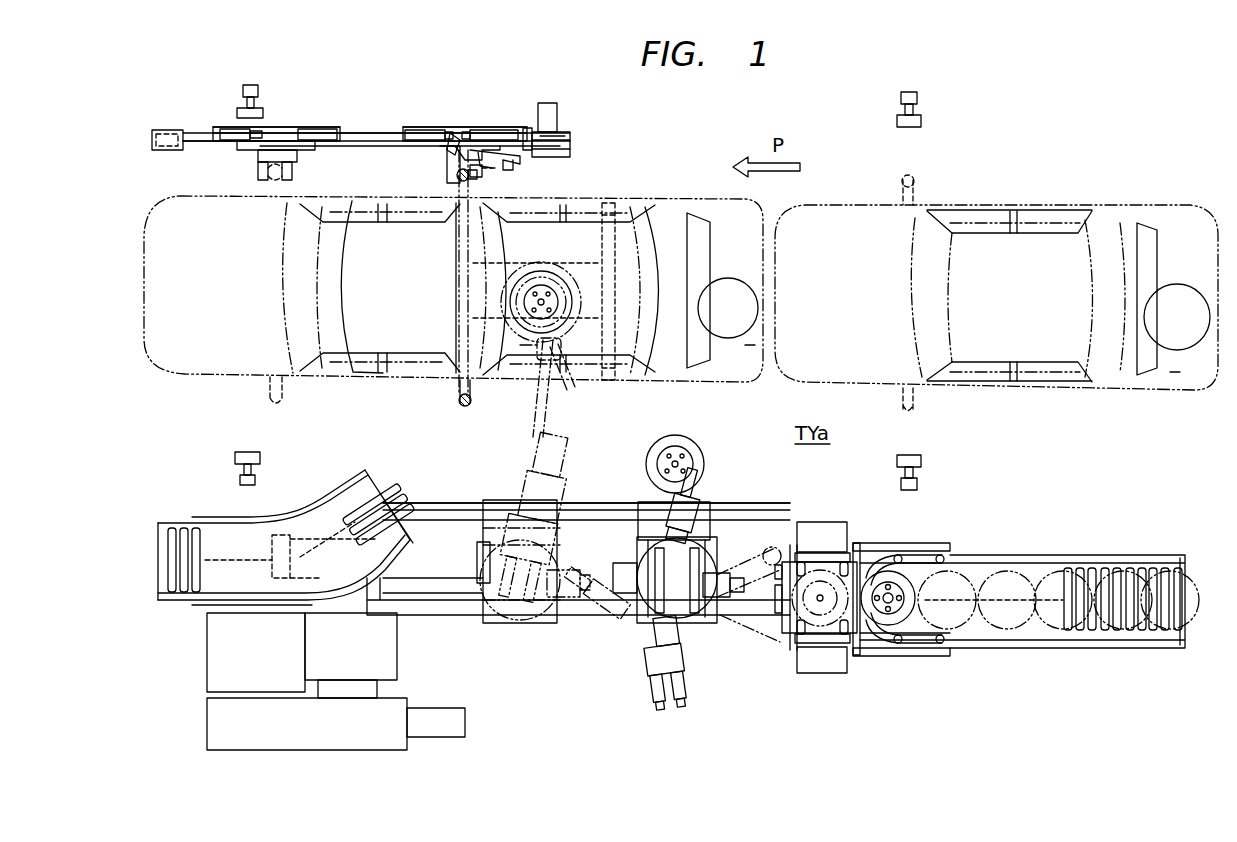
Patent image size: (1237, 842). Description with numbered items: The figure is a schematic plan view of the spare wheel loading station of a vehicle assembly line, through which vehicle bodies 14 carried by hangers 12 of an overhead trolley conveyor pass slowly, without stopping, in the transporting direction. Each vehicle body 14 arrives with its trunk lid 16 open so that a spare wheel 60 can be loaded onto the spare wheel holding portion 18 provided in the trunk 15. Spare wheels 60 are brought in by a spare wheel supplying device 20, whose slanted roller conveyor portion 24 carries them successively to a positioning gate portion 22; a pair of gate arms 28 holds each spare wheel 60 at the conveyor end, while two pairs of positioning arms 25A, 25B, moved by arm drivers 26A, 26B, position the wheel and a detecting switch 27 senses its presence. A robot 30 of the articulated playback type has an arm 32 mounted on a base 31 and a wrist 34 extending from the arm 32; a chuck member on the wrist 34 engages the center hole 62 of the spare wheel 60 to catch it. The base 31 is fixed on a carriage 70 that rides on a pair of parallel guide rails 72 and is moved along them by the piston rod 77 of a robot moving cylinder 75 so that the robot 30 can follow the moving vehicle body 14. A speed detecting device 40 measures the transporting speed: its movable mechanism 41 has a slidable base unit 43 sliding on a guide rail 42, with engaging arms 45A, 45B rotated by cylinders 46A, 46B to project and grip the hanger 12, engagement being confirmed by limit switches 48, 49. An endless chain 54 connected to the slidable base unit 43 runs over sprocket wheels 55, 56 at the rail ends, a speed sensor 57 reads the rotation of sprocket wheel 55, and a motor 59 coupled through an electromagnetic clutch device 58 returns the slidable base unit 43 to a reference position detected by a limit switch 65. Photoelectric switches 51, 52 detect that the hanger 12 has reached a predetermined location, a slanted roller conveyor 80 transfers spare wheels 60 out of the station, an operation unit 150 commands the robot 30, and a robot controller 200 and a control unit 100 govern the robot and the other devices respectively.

The hanger 12 is at (262, 196).
The vehicle body 14 is at (353, 378).
The trunk 15 is at (527, 348).
The trunk lid 16 is at (700, 250).
The spare wheel holding portion 18 is at (588, 268).
The spare wheel supplying device 20 is at (893, 662).
The positioning gate portion 22 is at (758, 601).
The roller conveyor portion 24 is at (968, 555).
The positioning arms 25A is at (755, 530).
The positioning arms 25B is at (793, 640).
The arm driver 26A is at (823, 522).
The arm driver 26B is at (822, 673).
The detecting switch 27 is at (778, 640).
The gate arms 28 is at (917, 543).
The robot 30 is at (643, 628).
The base 31 is at (630, 557).
The arm 32 is at (553, 397).
The wrist 34 is at (700, 497).
The speed detecting device 40 is at (388, 122).
The movable mechanism 41 is at (283, 128).
The guide rail 42 is at (370, 128).
The slidable base unit 43 is at (466, 130).
The engaging arm 45A is at (265, 170).
The engaging arm 45B is at (296, 170).
The cylinder 46A is at (414, 133).
The cylinder 46B is at (493, 130).
The limit switch 48 is at (450, 182).
The limit switch 49 is at (485, 172).
The photoelectric switch 51 is at (922, 122).
The photoelectric switch 52 is at (240, 110).
The endless chain 54 is at (189, 144).
The sprocket wheel 55 is at (572, 144).
The sprocket wheel 56 is at (155, 130).
The speed sensor 57 is at (572, 151).
The electromagnetic clutch device 58 is at (560, 140).
The motor 59 is at (552, 104).
The spare wheel 60 is at (541, 270).
The center hole 62 is at (905, 603).
The limit switch 65 is at (528, 130).
The carriage 70 is at (637, 502).
The guide rails 72 is at (410, 500).
The robot moving cylinder 75 is at (440, 615).
The piston rod 77 is at (547, 558).
The roller conveyor 80 is at (300, 515).
The control unit 100 is at (207, 717).
The operation unit 150 is at (465, 724).
The robot controller 200 is at (207, 667).